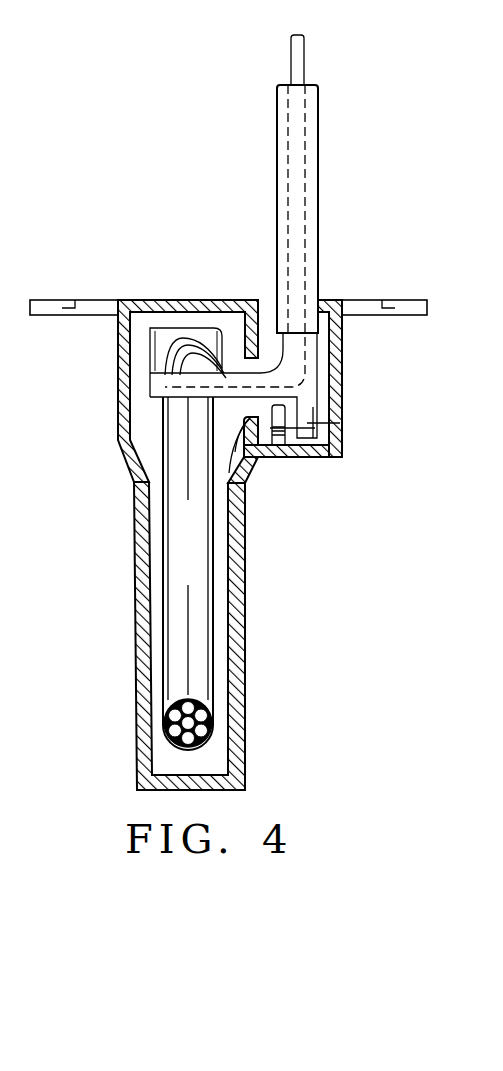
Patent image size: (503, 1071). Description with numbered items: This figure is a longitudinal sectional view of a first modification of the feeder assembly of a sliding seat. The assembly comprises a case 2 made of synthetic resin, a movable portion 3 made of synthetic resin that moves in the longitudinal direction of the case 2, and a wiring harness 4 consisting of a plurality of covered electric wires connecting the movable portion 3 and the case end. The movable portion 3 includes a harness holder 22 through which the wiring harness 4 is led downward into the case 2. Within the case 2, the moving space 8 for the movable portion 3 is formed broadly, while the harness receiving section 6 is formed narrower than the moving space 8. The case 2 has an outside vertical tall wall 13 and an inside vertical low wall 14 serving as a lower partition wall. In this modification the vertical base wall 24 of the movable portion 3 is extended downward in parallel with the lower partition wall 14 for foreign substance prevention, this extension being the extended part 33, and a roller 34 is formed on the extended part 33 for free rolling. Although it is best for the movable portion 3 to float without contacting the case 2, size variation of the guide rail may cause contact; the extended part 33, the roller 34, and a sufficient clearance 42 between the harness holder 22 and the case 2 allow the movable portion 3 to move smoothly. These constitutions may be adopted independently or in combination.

The case 2 is at (234, 545).
The movable portion 3 is at (322, 135).
The wiring harness 4 is at (213, 721).
The harness receiving section 6 is at (137, 628).
The moving space 8 is at (150, 410).
The outside vertical tall wall 13 is at (342, 366).
The inside vertical low wall 14 is at (235, 453).
The harness holder 22 is at (160, 350).
The vertical base wall 24 is at (318, 185).
The extended part 33 is at (315, 428).
The roller 34 is at (290, 456).
The clearance 42 is at (138, 356).